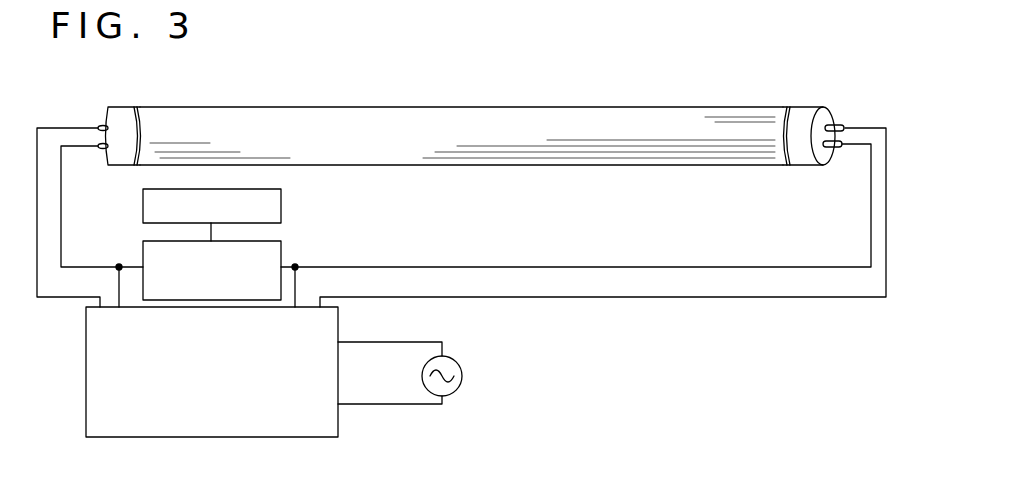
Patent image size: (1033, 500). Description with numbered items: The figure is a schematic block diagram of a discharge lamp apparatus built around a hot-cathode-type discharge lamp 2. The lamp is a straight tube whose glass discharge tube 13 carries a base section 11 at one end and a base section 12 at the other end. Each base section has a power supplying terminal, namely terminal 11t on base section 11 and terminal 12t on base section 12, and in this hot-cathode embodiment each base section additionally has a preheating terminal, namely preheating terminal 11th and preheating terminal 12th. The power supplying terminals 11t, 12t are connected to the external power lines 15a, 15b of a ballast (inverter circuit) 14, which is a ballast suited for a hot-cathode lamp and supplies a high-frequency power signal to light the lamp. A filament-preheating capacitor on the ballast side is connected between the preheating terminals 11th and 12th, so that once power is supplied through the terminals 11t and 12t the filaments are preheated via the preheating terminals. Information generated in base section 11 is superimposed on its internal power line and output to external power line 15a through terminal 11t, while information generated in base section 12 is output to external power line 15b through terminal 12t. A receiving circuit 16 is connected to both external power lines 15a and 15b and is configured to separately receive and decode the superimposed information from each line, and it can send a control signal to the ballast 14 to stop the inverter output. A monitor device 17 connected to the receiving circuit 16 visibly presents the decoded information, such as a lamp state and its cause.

The discharge lamp 2 is at (462, 125).
The base section 11 is at (124, 107).
The preheating terminal 11th is at (99, 127).
The power supplying terminal 11t is at (101, 150).
The base section 12 is at (805, 107).
The preheating terminal 12th is at (839, 126).
The power supplying terminal 12t is at (840, 148).
The discharge tube 13 is at (397, 107).
The ballast (inverter circuit) 14 is at (338, 430).
The external power line 15a is at (61, 240).
The external power line 15b is at (871, 218).
The receiving circuit 16 is at (281, 250).
The monitor device 17 is at (281, 207).